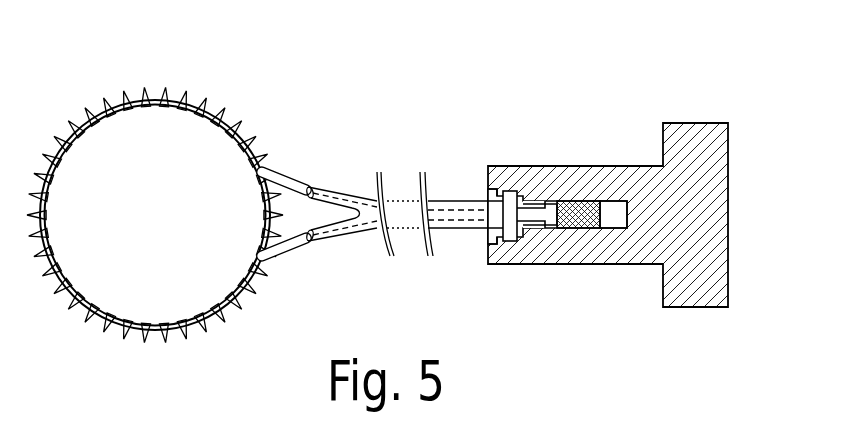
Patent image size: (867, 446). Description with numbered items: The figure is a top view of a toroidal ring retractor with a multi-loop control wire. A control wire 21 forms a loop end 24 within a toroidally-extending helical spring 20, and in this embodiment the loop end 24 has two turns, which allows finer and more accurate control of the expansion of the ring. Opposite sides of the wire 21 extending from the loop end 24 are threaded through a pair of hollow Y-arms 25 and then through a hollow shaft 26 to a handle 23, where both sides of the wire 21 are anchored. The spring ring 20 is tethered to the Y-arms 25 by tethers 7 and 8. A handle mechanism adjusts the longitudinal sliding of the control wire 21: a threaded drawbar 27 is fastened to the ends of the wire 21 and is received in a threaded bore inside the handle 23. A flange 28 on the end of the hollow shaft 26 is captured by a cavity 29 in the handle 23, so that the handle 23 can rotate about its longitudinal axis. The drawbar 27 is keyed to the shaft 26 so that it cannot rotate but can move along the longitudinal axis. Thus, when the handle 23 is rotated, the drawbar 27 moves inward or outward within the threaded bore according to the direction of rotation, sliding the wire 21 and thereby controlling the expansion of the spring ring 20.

The toroidally-extending helical spring 20 is at (163, 99).
The loop end 24 is at (70, 270).
The control wire 21 is at (262, 160).
The tether 7 is at (297, 172).
The tether 8 is at (305, 246).
The hollow Y-arms 25 is at (348, 200).
The hollow shaft 26 is at (453, 201).
The handle 23 is at (683, 123).
The flange 28 is at (507, 240).
The cavity 29 is at (513, 191).
The threaded drawbar 27 is at (571, 224).